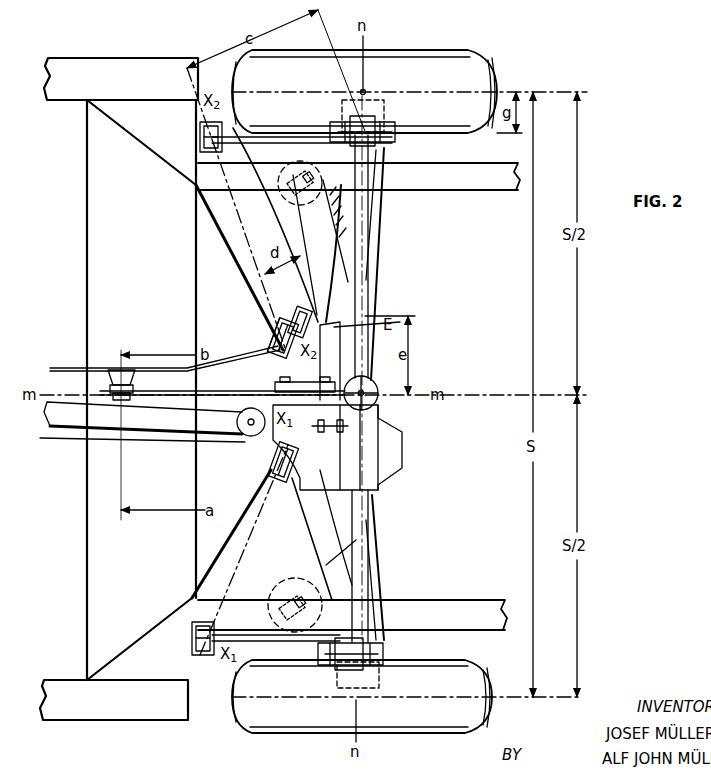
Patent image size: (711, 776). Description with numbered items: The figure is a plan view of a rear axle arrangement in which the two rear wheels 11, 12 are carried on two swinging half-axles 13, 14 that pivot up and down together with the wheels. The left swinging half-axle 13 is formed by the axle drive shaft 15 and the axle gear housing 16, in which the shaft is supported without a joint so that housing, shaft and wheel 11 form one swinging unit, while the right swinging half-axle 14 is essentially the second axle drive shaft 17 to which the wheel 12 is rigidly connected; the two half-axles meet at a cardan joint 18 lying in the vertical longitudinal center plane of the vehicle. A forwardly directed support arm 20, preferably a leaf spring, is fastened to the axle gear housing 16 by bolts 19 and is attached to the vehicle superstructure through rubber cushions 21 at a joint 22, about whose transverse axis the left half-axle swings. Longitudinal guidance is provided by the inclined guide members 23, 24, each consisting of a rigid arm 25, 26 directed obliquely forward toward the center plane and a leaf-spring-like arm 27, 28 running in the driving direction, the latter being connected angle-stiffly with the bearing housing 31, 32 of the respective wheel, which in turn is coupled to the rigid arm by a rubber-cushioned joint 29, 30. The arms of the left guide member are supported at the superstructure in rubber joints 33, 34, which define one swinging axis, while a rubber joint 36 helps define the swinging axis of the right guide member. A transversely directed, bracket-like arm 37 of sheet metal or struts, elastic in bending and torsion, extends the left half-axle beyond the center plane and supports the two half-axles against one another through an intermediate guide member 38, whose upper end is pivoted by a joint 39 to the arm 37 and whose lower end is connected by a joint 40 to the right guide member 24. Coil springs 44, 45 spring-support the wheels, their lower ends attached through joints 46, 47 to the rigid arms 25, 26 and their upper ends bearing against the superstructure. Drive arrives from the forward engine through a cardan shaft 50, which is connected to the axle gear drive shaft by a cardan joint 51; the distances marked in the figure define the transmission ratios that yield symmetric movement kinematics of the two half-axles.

The rear wheel 11 is at (478, 710).
The rear wheel 12 is at (478, 70).
The left swinging half-axle 13 is at (381, 590).
The right swinging half-axle 14 is at (379, 234).
The axle drive shaft 15 is at (370, 537).
The axle gear housing 16 is at (393, 466).
The second axle drive shaft 17 is at (370, 298).
The cardan joint 18 is at (380, 402).
The bolts 19 is at (320, 383).
The support arm 20 is at (226, 389).
The rubber cushions 21 is at (97, 398).
The joint 22 is at (118, 372).
The left inclined guide member 23 is at (305, 516).
The right inclined guide member 24 is at (322, 268).
The rigid arm 25 is at (345, 556).
The rigid arm 26 is at (353, 265).
The leaf-spring-like arm 27 is at (290, 643).
The leaf-spring-like arm 28 is at (300, 140).
The joint 29 is at (385, 650).
The joint 30 is at (395, 138).
The bearing housing 31 is at (380, 680).
The bearing housing 32 is at (386, 100).
The rubber joint 33 is at (286, 476).
The rubber joint 34 is at (198, 642).
The rubber joint 36 is at (205, 128).
The transversely directed arm 37 is at (330, 430).
The intermediate guide member 38 is at (335, 322).
The joint 39 is at (280, 322).
The joint 40 is at (273, 335).
The coil spring 44 is at (291, 582).
The coil spring 45 is at (284, 202).
The joint 46 is at (280, 600).
The joint 47 is at (290, 190).
The cardan shaft 50 is at (155, 437).
The cardan joint 51 is at (246, 436).